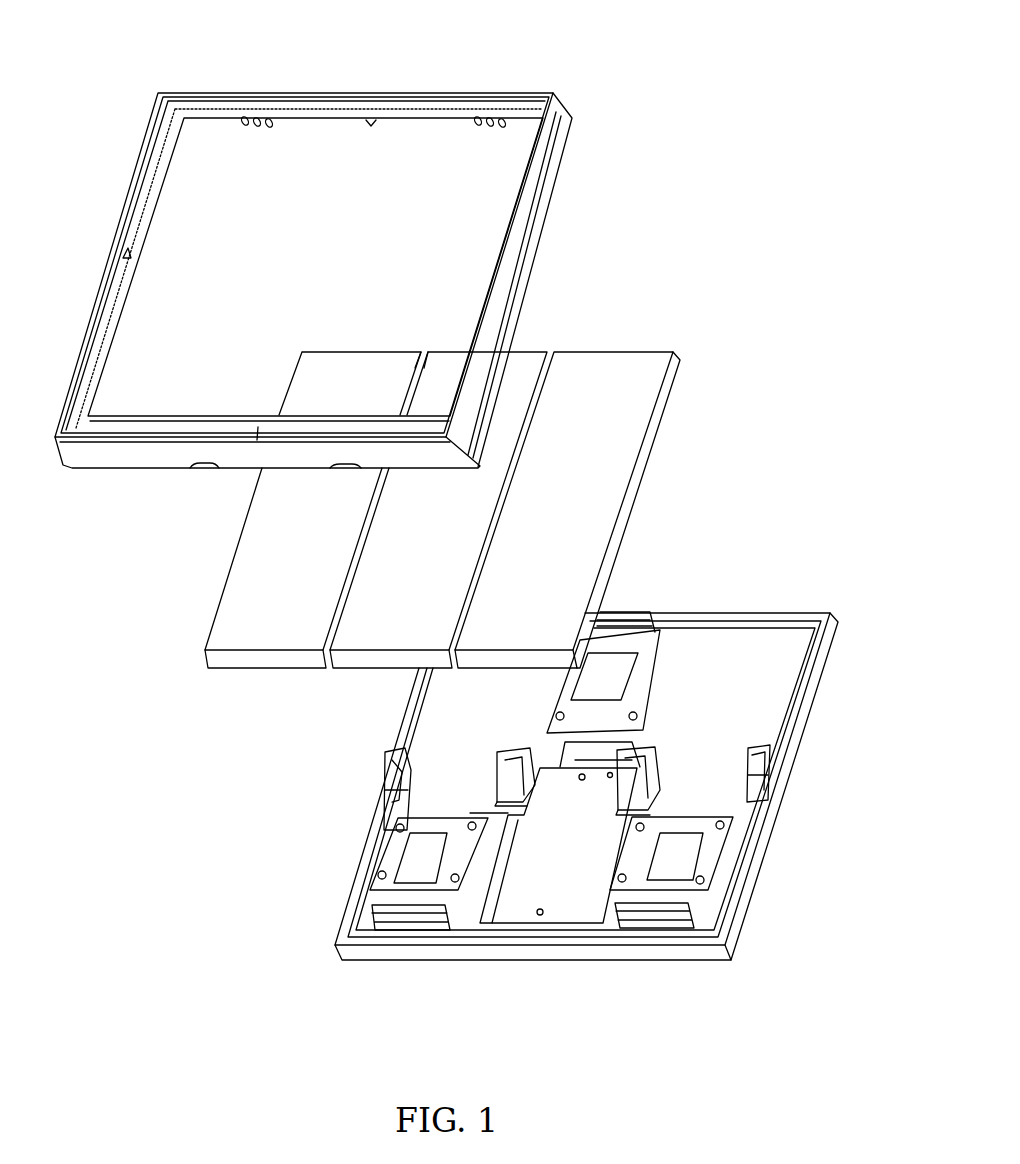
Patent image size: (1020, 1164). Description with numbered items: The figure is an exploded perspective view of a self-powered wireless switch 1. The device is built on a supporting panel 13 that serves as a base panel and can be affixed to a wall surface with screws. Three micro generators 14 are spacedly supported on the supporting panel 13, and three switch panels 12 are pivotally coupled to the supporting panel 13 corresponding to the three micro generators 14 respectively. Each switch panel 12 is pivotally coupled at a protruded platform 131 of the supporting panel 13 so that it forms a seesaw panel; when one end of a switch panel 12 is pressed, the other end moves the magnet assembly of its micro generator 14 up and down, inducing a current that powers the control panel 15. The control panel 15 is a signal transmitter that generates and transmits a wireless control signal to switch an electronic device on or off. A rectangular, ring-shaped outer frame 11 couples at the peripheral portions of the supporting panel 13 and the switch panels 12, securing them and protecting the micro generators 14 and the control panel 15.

The self-powered wireless switch 1 is at (703, 237).
The outer frame 11 is at (400, 88).
The switch panel 12 is at (600, 380).
The supporting panel 13 is at (593, 786).
The protruded platform 131 is at (382, 767).
The micro generator 14 is at (628, 640).
The control panel 15 is at (568, 893).